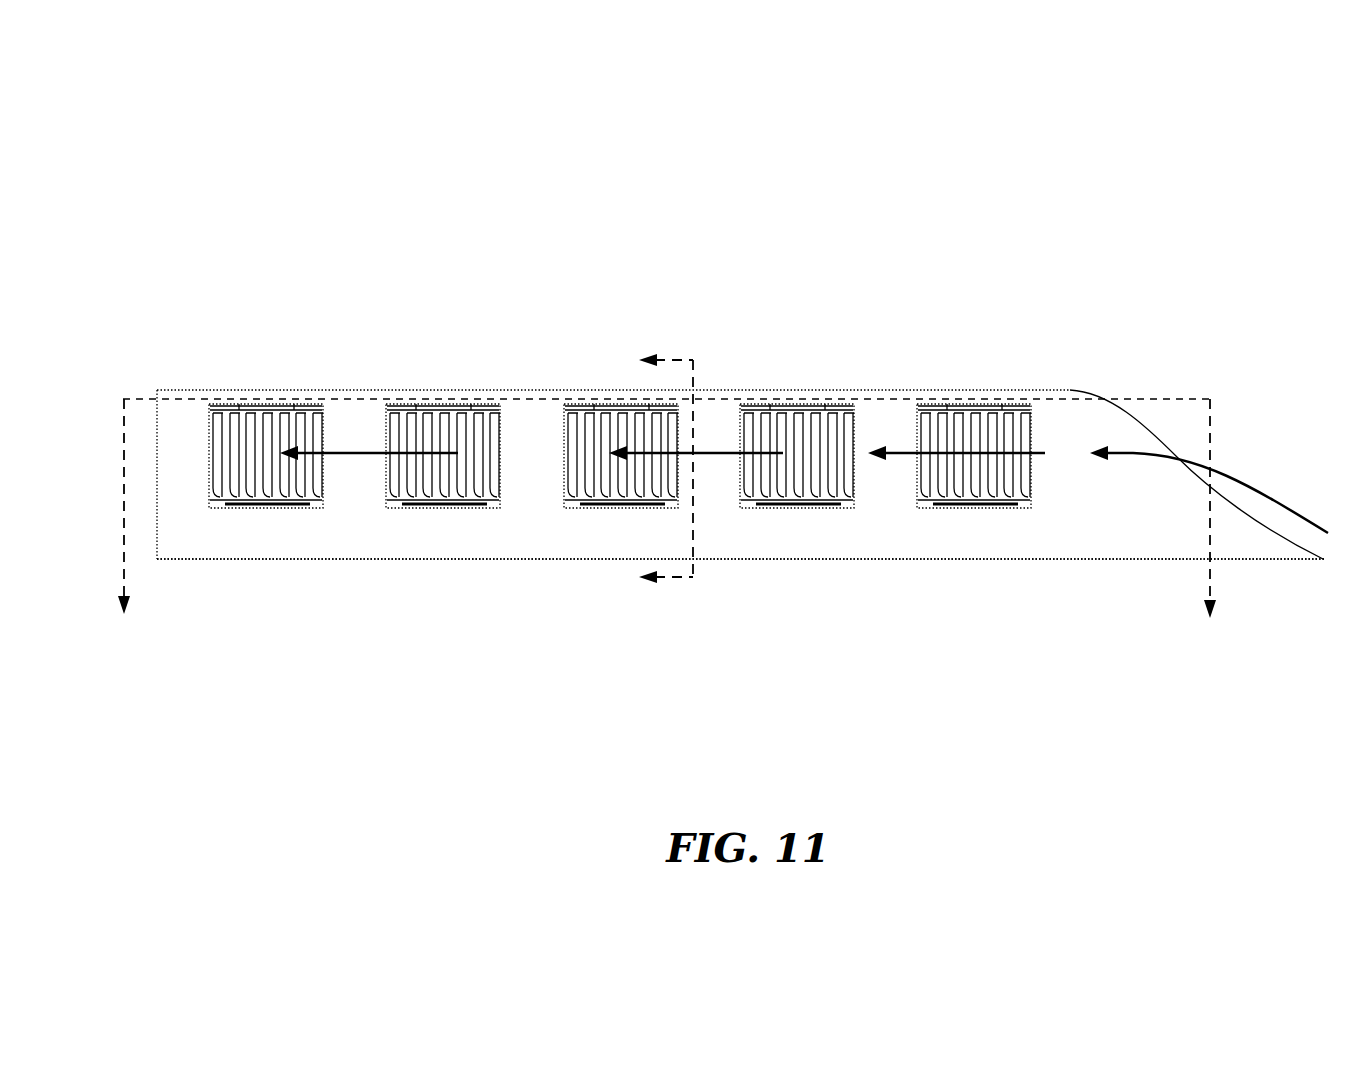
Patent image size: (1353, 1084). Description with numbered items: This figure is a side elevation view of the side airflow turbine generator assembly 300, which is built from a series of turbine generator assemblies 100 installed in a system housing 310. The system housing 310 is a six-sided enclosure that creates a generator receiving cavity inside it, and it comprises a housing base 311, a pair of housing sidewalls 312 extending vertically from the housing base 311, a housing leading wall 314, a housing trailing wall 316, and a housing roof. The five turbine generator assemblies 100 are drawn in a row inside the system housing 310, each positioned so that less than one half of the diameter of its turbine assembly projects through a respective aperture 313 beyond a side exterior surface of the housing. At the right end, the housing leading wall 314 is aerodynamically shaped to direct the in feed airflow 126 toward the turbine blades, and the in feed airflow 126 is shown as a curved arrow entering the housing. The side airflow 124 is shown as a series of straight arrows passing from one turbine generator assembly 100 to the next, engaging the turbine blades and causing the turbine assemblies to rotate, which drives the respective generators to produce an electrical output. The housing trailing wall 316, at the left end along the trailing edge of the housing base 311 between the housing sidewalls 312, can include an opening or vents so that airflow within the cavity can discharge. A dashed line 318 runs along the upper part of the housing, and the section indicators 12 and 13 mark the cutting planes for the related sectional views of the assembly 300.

The side airflow turbine generator assembly 300 is at (396, 295).
The system housing 310 is at (1104, 574).
The housing base 311 is at (740, 560).
The housing sidewalls 312 is at (862, 537).
The aperture 313 is at (390, 477).
The housing leading wall 314 is at (1217, 494).
The housing trailing wall 316 is at (157, 478).
The partition 318 is at (428, 390).
The turbine generator assembly 100 is at (189, 405).
The side airflow 124 is at (357, 457).
The in feed airflow 126 is at (1193, 460).
The section line 12 is at (667, 524).
The section line 13 is at (650, 469).